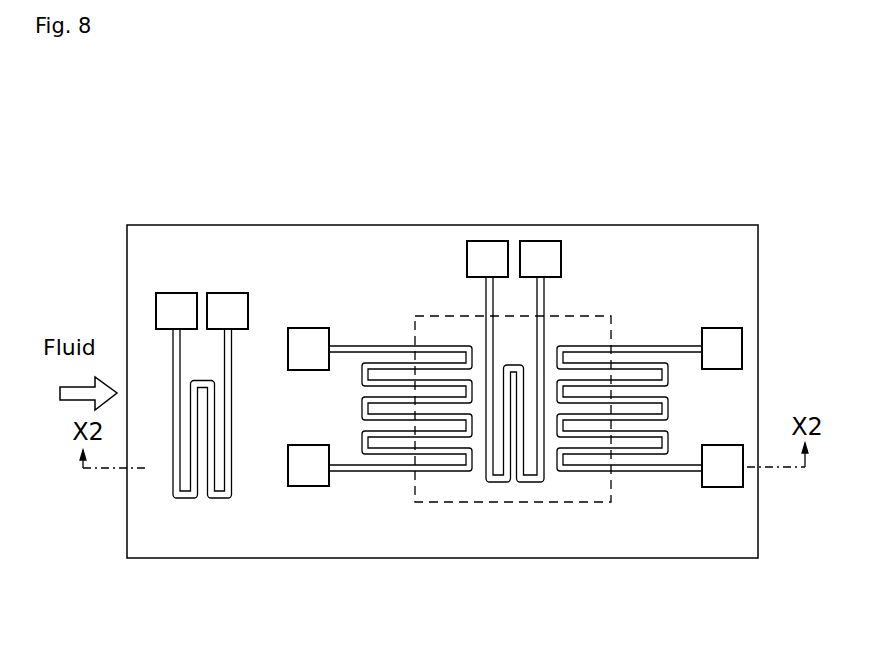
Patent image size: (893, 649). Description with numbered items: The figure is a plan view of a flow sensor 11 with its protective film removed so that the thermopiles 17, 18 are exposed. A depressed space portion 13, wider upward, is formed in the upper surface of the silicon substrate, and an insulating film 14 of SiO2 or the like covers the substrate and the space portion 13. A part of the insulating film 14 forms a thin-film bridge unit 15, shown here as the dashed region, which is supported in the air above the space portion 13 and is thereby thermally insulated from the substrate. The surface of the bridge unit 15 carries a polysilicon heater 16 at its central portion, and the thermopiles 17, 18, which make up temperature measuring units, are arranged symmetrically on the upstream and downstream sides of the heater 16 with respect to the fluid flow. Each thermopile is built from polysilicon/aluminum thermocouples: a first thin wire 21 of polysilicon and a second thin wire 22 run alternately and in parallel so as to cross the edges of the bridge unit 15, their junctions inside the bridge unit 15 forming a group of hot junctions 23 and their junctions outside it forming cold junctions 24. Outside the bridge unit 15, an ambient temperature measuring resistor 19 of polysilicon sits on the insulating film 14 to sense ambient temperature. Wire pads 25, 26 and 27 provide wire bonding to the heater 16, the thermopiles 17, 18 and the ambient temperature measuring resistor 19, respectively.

The flow sensor 11 is at (738, 125).
The space portion 13 is at (611, 316).
The insulating film 14 is at (293, 258).
The bridge unit 15 is at (575, 335).
The heater 16 is at (532, 478).
The thermopile 17 is at (403, 460).
The thermopile 18 is at (623, 468).
The ambient temperature measuring resistor 19 is at (217, 497).
The first thin wire 21 is at (556, 397).
The second thin wire 22 is at (556, 402).
The hot junctions 23 is at (470, 472).
The cold junctions 24 is at (358, 408).
The wire pad 25 is at (483, 257).
The wire pad 26 is at (302, 472).
The wire pad 27 is at (232, 307).